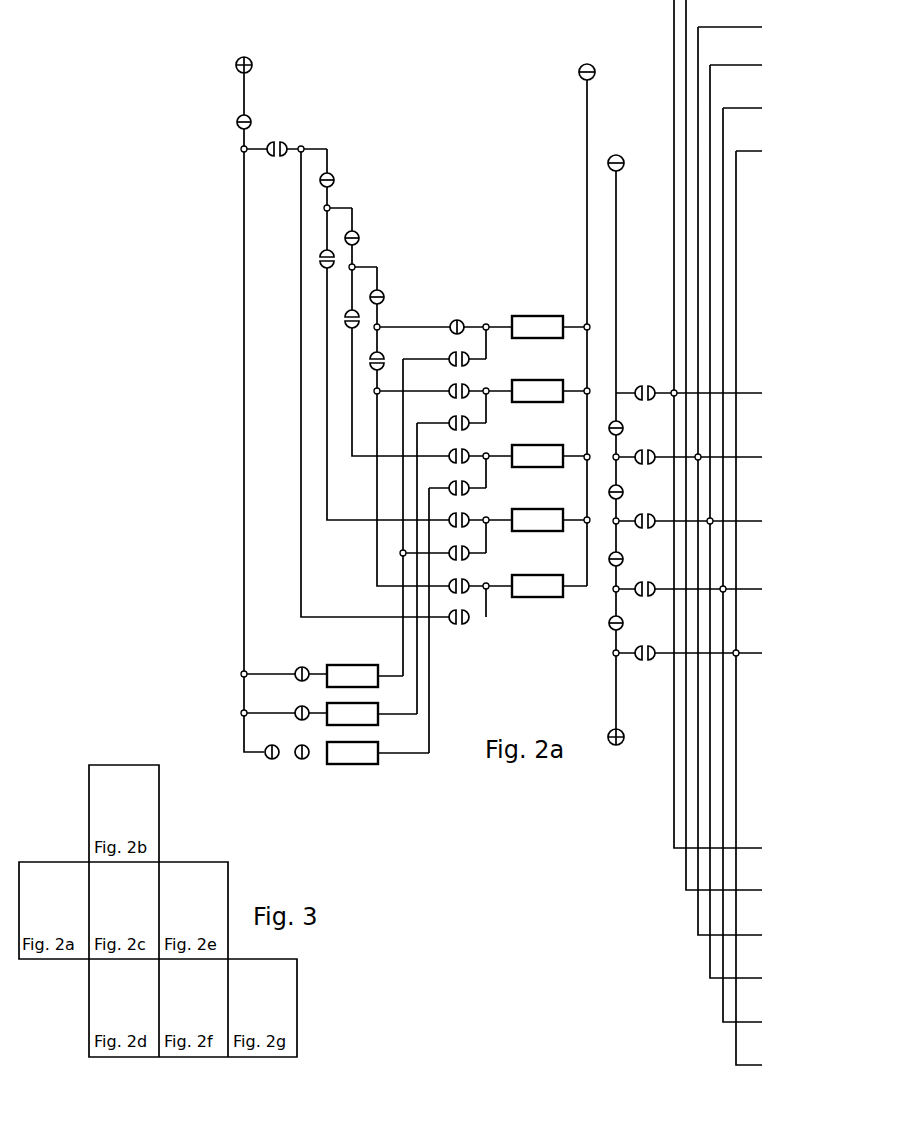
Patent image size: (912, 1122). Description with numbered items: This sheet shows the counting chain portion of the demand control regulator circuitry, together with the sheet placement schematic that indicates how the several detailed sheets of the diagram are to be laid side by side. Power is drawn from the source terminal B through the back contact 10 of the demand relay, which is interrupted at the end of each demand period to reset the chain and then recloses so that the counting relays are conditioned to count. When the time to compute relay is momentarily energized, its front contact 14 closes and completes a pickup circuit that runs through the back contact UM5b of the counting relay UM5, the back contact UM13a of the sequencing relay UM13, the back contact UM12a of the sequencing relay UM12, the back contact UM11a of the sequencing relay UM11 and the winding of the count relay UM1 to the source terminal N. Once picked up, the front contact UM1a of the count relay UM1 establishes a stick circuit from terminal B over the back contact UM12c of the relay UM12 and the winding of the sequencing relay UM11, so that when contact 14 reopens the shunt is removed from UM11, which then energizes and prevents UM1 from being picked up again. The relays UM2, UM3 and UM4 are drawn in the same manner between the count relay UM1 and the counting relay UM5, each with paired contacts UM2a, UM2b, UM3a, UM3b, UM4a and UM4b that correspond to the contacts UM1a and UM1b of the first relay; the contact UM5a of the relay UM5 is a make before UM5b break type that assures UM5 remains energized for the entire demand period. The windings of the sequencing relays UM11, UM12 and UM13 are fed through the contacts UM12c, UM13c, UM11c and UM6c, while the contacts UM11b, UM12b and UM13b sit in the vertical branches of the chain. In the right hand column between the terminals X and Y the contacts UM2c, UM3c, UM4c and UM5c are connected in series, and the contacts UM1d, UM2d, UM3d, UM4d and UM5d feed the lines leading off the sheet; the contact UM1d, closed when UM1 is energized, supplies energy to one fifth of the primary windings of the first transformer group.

The back contact of the TD relay 10 is at (250, 118).
The front contact of the time to compute relay TC 14 is at (283, 145).
The source terminal B is at (244, 55).
The source terminal N is at (587, 62).
The terminal X is at (616, 153).
The terminal Y is at (624, 738).
The count relay UM1 is at (537, 327).
The relay UM2 is at (537, 391).
The relay UM3 is at (537, 456).
The relay UM4 is at (537, 520).
The counting relay UM5 is at (537, 586).
The sequencing relay UM11 is at (352, 676).
The sequencing relay UM12 is at (352, 714).
The sequencing relay UM13 is at (352, 753).
The front contact of relay UM1 UM1a is at (453, 366).
The contact UM1b is at (471, 380).
The contact of relay UM1 UM1d is at (657, 381).
The contact UM2a is at (453, 418).
The contact UM2b is at (466, 451).
The contact UM2c is at (621, 423).
The contact UM2d is at (639, 452).
The contact UM3a is at (453, 483).
The contact UM3b is at (466, 515).
The contact UM3c is at (628, 481).
The contact UM3d is at (657, 509).
The contact UM4a is at (453, 548).
The contact UM4b is at (466, 581).
The contact UM4c is at (621, 554).
The contact UM4d is at (657, 577).
The contact of relay UM5 UM5a is at (466, 623).
The back contact of counting relay UM5 UM5b is at (334, 178).
The contact UM5c is at (609, 621).
The contact UM5d is at (652, 659).
The contact UM6c is at (305, 759).
The back contact of sequencing relay UM11 UM11a is at (466, 312).
The contact UM11b is at (383, 353).
The contact UM11c is at (269, 759).
The back contact of sequencing relay UM12 UM12a is at (383, 293).
The contact UM12b is at (345, 322).
The back contact of relay UM12 UM12c is at (305, 667).
The back contact of sequencing relay UM13 UM13a is at (359, 236).
The contact UM13b is at (320, 256).
The contact UM13c is at (305, 706).